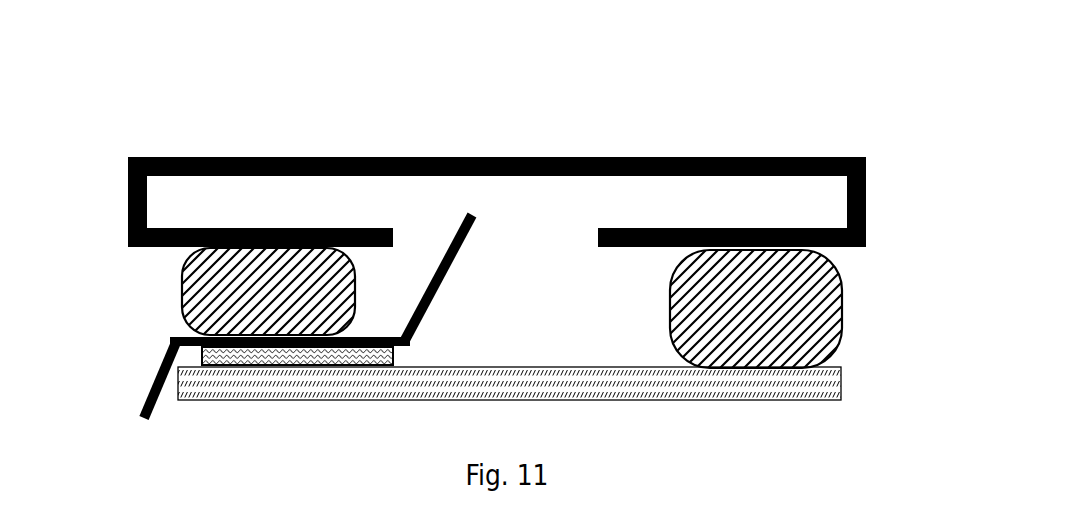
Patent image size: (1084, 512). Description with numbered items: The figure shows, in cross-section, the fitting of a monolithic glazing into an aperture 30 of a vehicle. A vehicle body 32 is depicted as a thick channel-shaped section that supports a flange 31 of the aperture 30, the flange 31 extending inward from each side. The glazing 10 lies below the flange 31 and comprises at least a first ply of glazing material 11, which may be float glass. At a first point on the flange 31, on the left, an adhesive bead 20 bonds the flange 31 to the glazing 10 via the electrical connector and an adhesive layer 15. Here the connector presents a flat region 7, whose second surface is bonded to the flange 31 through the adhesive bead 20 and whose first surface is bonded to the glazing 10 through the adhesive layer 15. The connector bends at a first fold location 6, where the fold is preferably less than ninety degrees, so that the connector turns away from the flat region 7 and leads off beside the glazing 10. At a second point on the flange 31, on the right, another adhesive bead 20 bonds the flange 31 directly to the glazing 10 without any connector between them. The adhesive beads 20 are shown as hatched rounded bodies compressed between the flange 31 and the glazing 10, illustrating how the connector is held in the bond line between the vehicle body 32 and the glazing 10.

The aperture 30 is at (454, 155).
The flange 31 is at (262, 217).
The vehicle body 32 is at (518, 148).
The adhesive bead 20 is at (172, 289).
The flat region 7 is at (187, 332).
The first fold location 6 is at (162, 338).
The adhesive layer 15 is at (189, 359).
The glazing 10 is at (557, 352).
The first ply of glazing material 11 is at (850, 377).